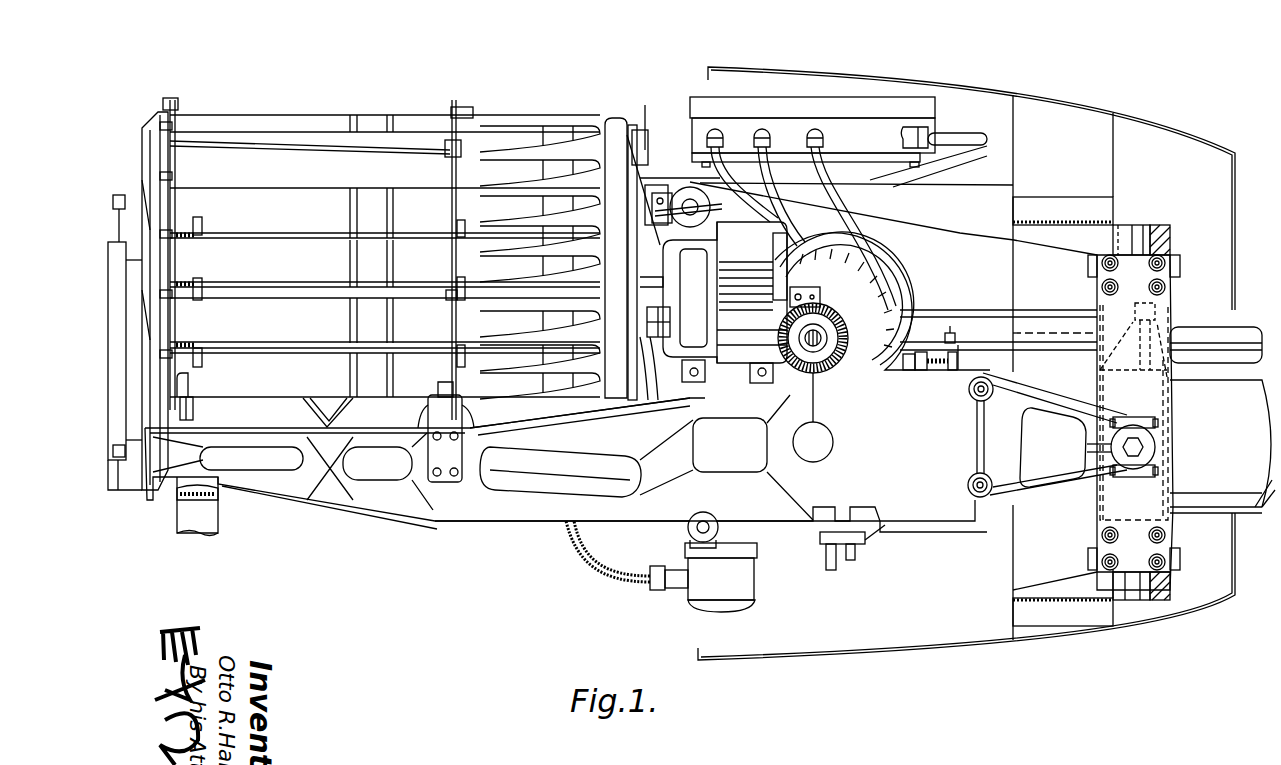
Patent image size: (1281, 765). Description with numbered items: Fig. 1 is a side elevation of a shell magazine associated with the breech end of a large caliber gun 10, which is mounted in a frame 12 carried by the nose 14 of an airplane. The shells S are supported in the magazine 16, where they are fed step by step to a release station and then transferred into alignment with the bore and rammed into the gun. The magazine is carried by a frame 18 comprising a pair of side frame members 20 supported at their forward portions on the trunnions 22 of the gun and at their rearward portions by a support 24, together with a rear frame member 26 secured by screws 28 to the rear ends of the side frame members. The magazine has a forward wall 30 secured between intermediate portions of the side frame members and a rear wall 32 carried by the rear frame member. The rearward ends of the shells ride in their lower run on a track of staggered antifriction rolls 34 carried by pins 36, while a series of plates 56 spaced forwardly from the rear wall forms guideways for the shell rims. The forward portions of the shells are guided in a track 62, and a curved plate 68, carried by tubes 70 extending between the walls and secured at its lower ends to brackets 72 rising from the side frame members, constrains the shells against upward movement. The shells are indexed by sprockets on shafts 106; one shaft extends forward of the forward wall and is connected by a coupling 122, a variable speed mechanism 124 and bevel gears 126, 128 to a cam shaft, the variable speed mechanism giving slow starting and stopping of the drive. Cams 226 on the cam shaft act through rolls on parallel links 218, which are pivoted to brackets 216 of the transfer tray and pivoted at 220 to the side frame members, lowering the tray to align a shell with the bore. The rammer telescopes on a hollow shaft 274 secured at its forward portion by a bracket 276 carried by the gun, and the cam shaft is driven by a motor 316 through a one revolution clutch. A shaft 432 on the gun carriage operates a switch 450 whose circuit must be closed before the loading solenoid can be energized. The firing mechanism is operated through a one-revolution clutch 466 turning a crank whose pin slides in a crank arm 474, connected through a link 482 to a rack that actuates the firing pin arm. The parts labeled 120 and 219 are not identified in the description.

The gun 10 is at (1225, 413).
The frame 12 is at (1171, 290).
The nose 14 is at (1125, 113).
The magazine 16 is at (338, 95).
The frame 18 is at (348, 526).
The side frame members 20 is at (510, 524).
The trunnions 22 is at (1157, 440).
The support 24 is at (214, 520).
The rear frame member 26 is at (115, 240).
The screws 28 is at (120, 490).
The forward wall 30 is at (616, 121).
The rear wall 32 is at (157, 123).
The antifriction rolls 34 is at (190, 372).
The pins 36 is at (190, 408).
The plates 56 is at (172, 106).
The track 62 is at (467, 88).
The curved plate 68 is at (460, 136).
The tubes 70 is at (520, 148).
The brackets 72 is at (465, 408).
The shafts 106 is at (634, 403).
The block 120 is at (465, 112).
The coupling 122 is at (654, 340).
The variable speed mechanism 124 is at (758, 264).
The bevel gear 126 is at (814, 418).
The bevel gear 128 is at (832, 374).
The brackets 216 is at (318, 410).
The parallel links 218 is at (600, 387).
The slot 219 is at (540, 463).
The pivot 220 is at (977, 478).
The cams 226 is at (880, 272).
The hollow shaft 274 is at (941, 312).
The bracket 276 is at (1160, 342).
The motor 316 is at (752, 583).
The shaft 432 is at (903, 363).
The switch 450 is at (954, 333).
The one-revolution clutch mechanism 466 is at (662, 178).
The crank arm 474 is at (675, 212).
The link 482 is at (748, 214).
The shells S is at (293, 219).